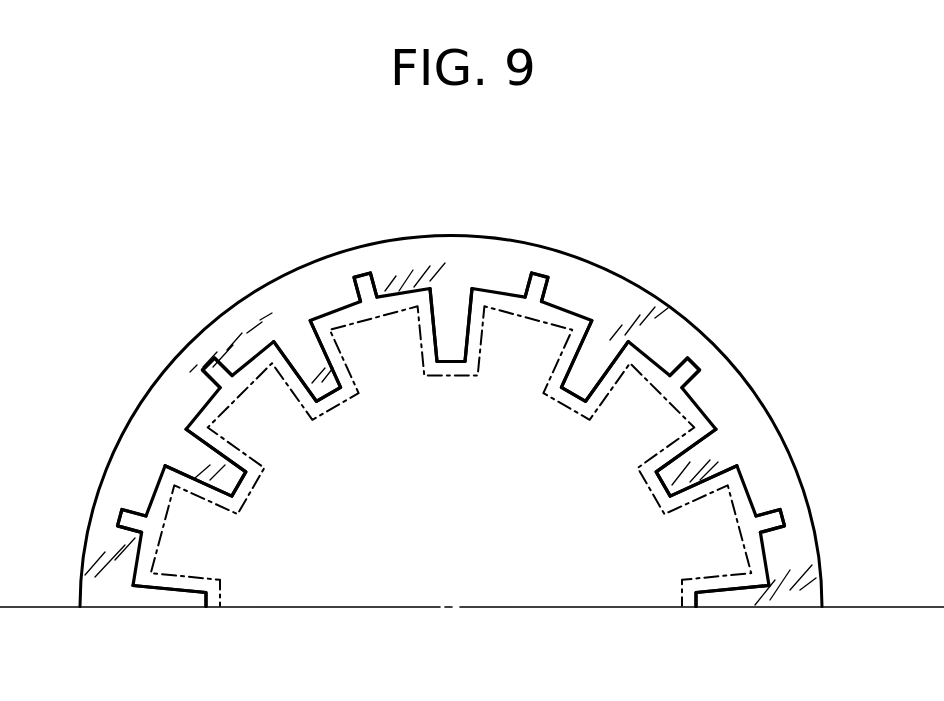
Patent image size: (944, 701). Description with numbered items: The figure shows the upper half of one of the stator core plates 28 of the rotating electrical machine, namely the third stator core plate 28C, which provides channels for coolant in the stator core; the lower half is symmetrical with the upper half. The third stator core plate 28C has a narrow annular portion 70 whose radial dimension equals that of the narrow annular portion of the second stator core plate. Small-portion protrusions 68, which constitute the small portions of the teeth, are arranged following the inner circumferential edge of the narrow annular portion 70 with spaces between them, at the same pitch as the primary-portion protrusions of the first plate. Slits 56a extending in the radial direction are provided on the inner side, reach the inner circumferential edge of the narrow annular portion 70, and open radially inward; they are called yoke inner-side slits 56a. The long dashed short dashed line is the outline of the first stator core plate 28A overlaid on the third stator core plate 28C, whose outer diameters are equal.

The narrow annular portion 70 is at (466, 258).
The yoke inner-side slit 56a is at (541, 286).
The stator core plate 28 is at (641, 290).
The third stator core plate 28C is at (450, 396).
The small-portion protrusion 68 is at (323, 388).
The first stator core plate 28A is at (313, 415).